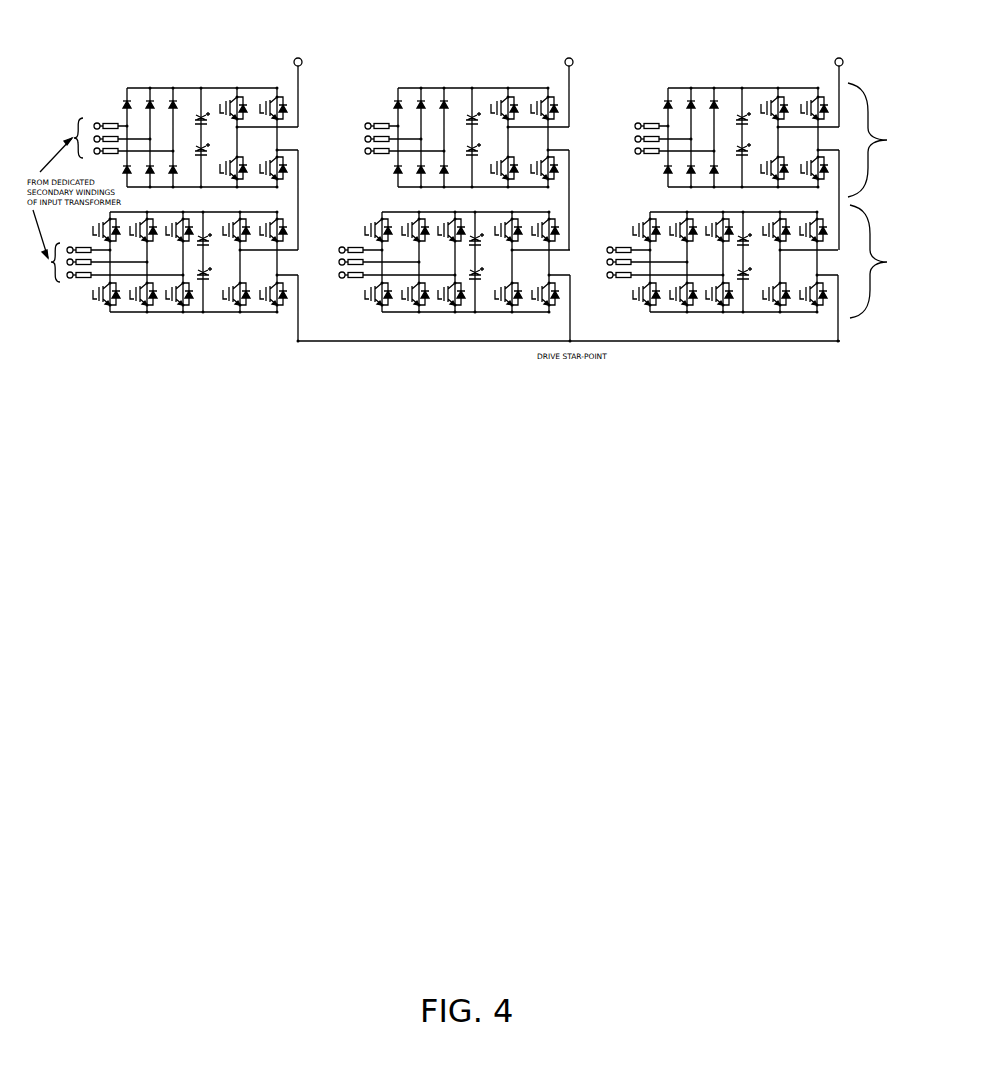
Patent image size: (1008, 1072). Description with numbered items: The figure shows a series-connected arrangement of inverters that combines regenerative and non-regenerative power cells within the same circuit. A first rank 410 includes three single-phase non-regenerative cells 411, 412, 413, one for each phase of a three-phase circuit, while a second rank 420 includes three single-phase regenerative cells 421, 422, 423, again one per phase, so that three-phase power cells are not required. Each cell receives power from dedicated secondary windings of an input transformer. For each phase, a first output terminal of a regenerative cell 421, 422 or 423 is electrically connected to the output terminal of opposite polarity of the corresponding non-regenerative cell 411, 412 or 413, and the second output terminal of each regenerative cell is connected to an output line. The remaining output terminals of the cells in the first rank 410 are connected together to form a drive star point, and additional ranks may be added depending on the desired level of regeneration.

The single-phase regenerative cell 421 is at (155, 63).
The single-phase regenerative cell 422 is at (425, 63).
The single-phase regenerative cell 423 is at (690, 63).
The single-phase non-regenerative cell 411 is at (125, 338).
The single-phase non-regenerative cell 412 is at (427, 322).
The single-phase non-regenerative cell 413 is at (725, 322).
The second rank 420 is at (887, 140).
The first rank 410 is at (887, 262).